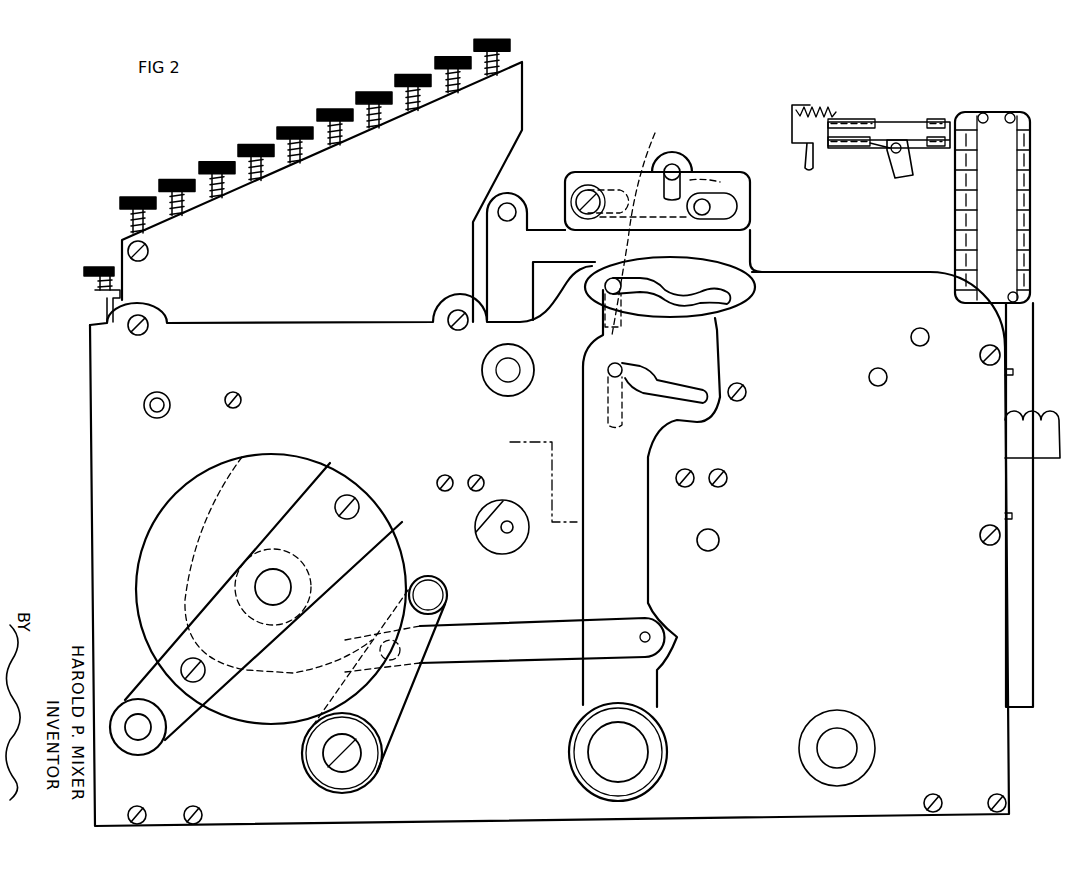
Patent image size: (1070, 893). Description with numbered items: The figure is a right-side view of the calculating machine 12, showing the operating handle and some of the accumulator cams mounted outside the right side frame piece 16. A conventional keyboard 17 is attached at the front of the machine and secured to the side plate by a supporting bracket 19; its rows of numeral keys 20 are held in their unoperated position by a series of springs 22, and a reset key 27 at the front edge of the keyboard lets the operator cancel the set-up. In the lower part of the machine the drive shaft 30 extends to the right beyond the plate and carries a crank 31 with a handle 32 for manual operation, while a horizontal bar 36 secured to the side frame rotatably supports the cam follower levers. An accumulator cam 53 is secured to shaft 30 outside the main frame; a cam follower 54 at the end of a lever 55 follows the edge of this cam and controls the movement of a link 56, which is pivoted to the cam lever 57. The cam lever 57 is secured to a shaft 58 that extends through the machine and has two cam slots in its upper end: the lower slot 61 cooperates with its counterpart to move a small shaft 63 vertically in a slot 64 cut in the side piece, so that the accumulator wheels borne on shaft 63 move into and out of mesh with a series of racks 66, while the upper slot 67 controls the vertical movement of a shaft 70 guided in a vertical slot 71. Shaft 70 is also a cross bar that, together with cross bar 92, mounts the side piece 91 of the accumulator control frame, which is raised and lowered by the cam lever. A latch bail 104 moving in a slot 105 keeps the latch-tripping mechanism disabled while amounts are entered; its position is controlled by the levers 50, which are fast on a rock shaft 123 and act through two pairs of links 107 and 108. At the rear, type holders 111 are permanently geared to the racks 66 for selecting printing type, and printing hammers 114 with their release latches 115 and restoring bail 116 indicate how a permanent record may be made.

The calculating mechanism 12 is at (30, 447).
The side frame piece 16 is at (103, 598).
The keyboard 17 is at (210, 140).
The supporting bracket 19 is at (140, 275).
The numeral keys 20 is at (337, 108).
The springs 22 is at (118, 212).
The reset key 27 is at (84, 272).
The drive shaft 30 is at (276, 588).
The crank 31 is at (165, 686).
The handle 32 is at (152, 735).
The horizontal bar 36 is at (355, 750).
The levers 50 is at (495, 270).
The accumulator cam 53 is at (215, 515).
The cam follower 54 is at (442, 588).
The lever 55 is at (405, 685).
The link 56 is at (528, 636).
The cam lever 57 is at (632, 518).
The shaft 58 is at (628, 750).
The cam slot 61 is at (684, 382).
The small shaft 63 is at (618, 365).
The slot 64 is at (613, 408).
The racks 66 is at (1050, 415).
The upper slot 67 is at (735, 300).
The shaft 70 is at (620, 283).
The vertical slot 71 is at (605, 300).
The side piece 91 is at (627, 174).
The cross bar 92 is at (675, 165).
The latch bail 104 is at (590, 195).
The slot 105 is at (630, 238).
The links 107 is at (548, 212).
The links 108 is at (674, 223).
The type holders 111 is at (993, 125).
The printing hammers 114 is at (897, 128).
The release latches 115 is at (810, 160).
The restoring bail 116 is at (896, 154).
The rock shaft 123 is at (506, 375).